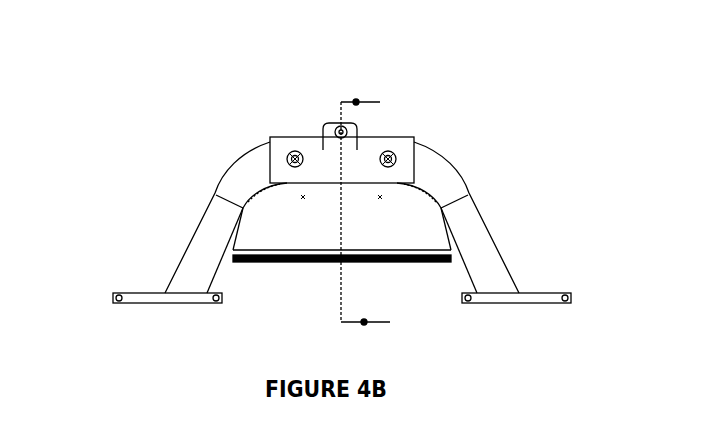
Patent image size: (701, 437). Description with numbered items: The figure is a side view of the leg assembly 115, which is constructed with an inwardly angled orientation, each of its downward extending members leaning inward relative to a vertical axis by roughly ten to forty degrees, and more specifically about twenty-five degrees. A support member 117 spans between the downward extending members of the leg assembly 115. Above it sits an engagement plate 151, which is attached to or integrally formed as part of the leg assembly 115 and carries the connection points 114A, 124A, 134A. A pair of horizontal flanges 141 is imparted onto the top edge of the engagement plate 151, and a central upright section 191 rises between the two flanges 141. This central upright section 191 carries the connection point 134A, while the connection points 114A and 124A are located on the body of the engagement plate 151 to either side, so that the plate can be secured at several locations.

The leg assembly 115 is at (193, 235).
The support member 117 is at (308, 235).
The engagement plate 151 is at (322, 158).
The horizontal flanges 141 is at (380, 135).
The central upright section 191 is at (322, 122).
The connection point 134A is at (345, 127).
The connection point 114A is at (288, 157).
The connection point 124A is at (395, 153).